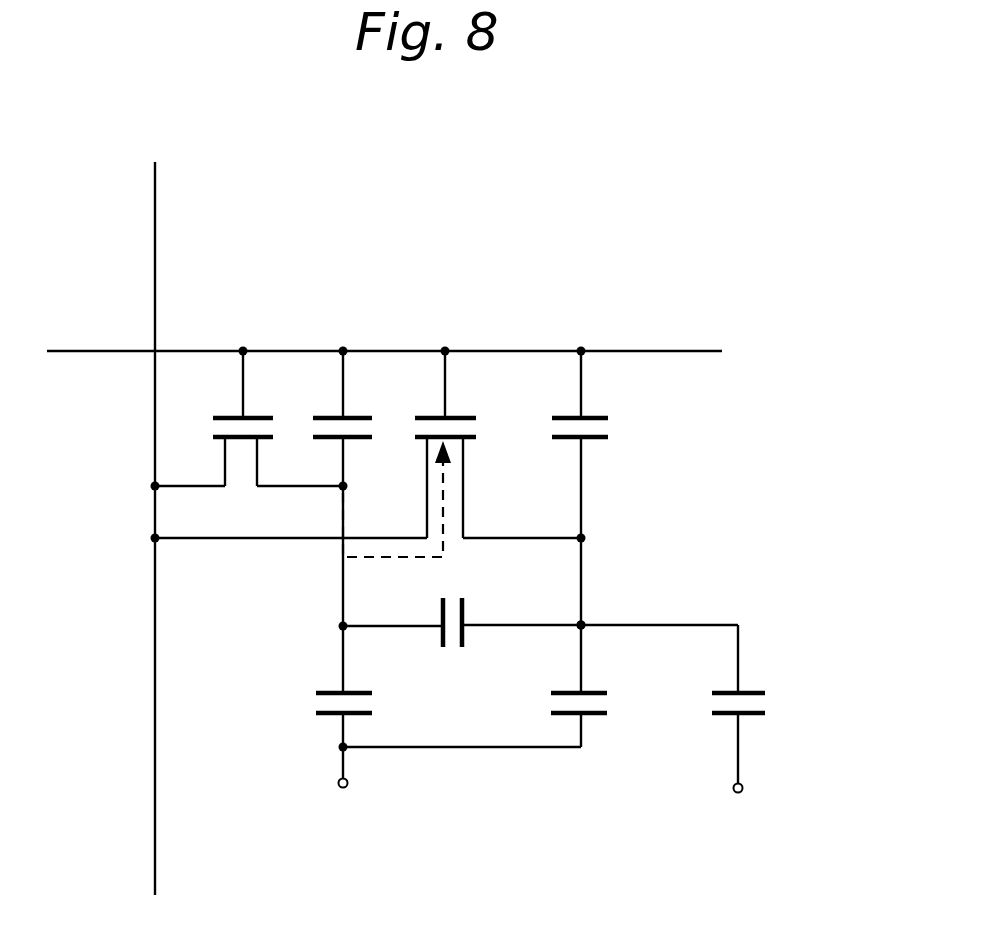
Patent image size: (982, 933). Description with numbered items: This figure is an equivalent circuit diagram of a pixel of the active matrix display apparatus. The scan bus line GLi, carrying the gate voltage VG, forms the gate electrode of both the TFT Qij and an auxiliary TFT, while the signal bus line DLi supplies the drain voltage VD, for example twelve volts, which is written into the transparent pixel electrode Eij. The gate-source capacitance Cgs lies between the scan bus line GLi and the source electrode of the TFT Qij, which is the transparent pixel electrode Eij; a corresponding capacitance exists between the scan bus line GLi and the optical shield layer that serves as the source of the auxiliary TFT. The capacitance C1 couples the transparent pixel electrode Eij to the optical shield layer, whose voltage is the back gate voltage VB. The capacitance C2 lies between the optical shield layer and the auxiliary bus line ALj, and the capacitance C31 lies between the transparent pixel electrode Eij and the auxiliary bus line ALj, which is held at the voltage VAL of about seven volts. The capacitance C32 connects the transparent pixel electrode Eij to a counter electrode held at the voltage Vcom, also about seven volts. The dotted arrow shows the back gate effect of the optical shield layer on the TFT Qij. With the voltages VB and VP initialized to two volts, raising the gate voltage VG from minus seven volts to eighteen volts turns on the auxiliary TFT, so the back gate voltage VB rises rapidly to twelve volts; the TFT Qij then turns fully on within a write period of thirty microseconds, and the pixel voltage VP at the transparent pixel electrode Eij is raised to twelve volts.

The scan bus line GLi is at (623, 351).
The signal bus line DLi is at (155, 868).
The TFT Qij is at (416, 430).
The gate-source capacitance Cgs is at (556, 431).
The capacitance C1 is at (453, 649).
The capacitance C2 is at (367, 705).
The capacitance C31 is at (597, 704).
The capacitance C32 is at (759, 704).
The auxiliary bus line ALj is at (338, 783).
The transparent pixel electrode Eij is at (582, 625).
The gate voltage VG is at (395, 333).
The drain voltage VD is at (115, 543).
The back gate voltage VB is at (317, 618).
The pixel electrode voltage VP is at (641, 606).
The auxiliary bus line voltage VAL is at (341, 818).
The counter electrode voltage Vcom is at (738, 824).